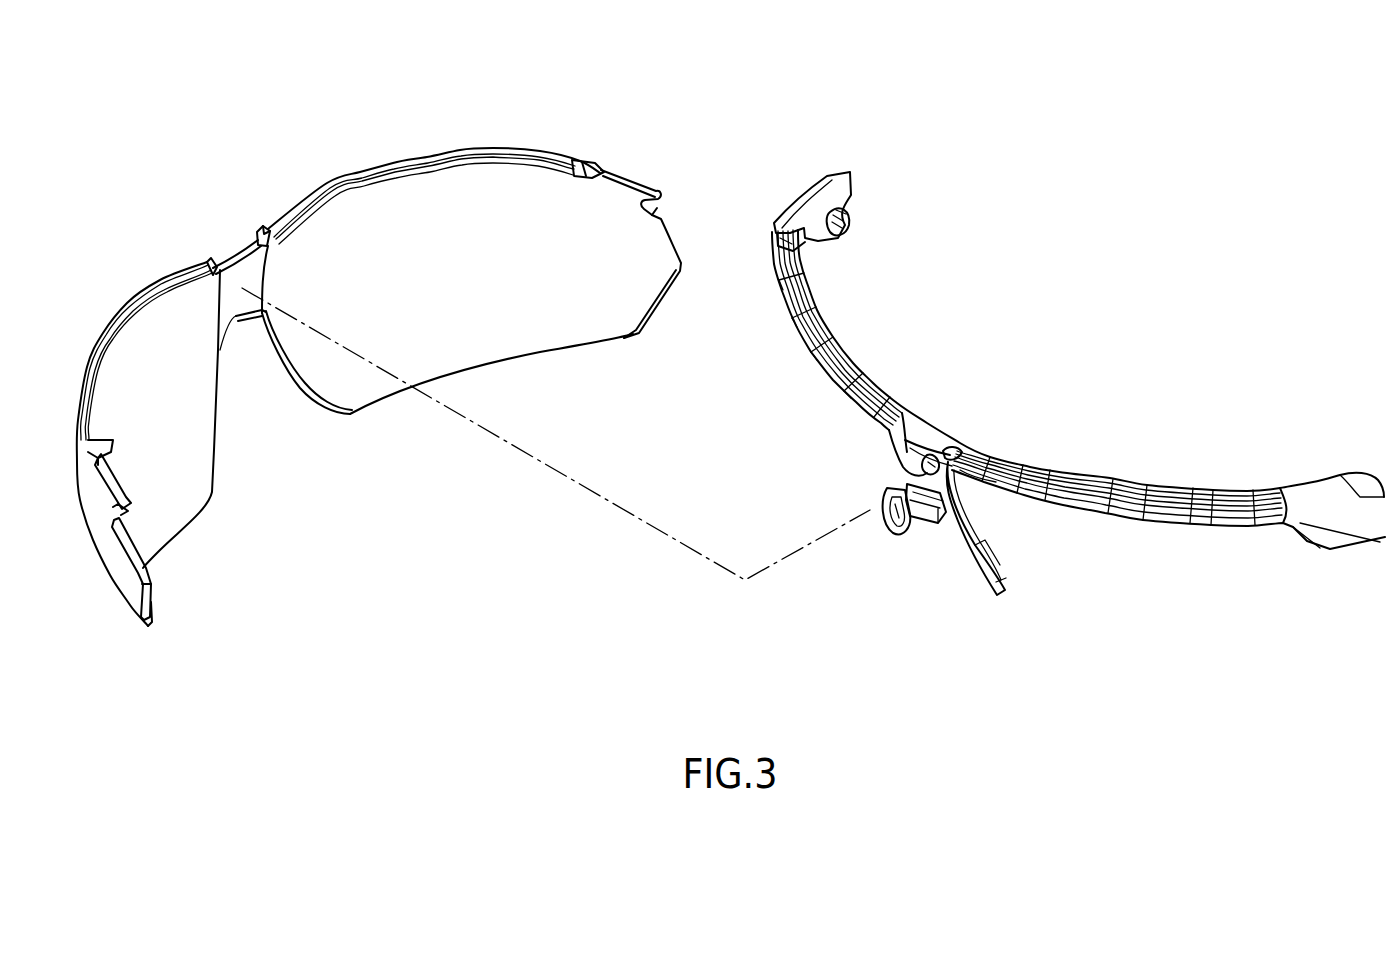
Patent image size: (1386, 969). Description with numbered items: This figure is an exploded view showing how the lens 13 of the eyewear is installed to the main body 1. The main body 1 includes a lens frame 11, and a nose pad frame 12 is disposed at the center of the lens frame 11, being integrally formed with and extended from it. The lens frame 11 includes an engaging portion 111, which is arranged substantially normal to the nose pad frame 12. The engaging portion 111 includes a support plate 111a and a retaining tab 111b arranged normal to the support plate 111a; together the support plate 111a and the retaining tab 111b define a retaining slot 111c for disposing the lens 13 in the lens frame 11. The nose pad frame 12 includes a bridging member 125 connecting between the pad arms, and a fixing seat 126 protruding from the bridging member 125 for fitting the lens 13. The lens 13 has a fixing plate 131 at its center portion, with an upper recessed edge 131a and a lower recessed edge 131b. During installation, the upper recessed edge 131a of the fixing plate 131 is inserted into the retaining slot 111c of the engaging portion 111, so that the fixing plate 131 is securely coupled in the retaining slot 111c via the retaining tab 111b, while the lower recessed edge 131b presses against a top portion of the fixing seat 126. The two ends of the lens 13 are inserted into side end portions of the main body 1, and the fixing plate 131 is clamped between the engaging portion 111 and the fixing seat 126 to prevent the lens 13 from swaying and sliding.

The main body 1 is at (1078, 443).
The lens frame 11 is at (850, 362).
The engaging portion 111 is at (978, 403).
The support plate 111a is at (936, 446).
The retaining tab 111b is at (916, 467).
The retaining slot 111c is at (1005, 441).
The nose pad frame 12 is at (951, 588).
The bridging member 125 is at (903, 519).
The fixing seat 126 is at (936, 525).
The lens 13 is at (379, 330).
The fixing plate 131 is at (245, 277).
The upper recessed edge 131a is at (237, 259).
The lower recessed edge 131b is at (245, 323).